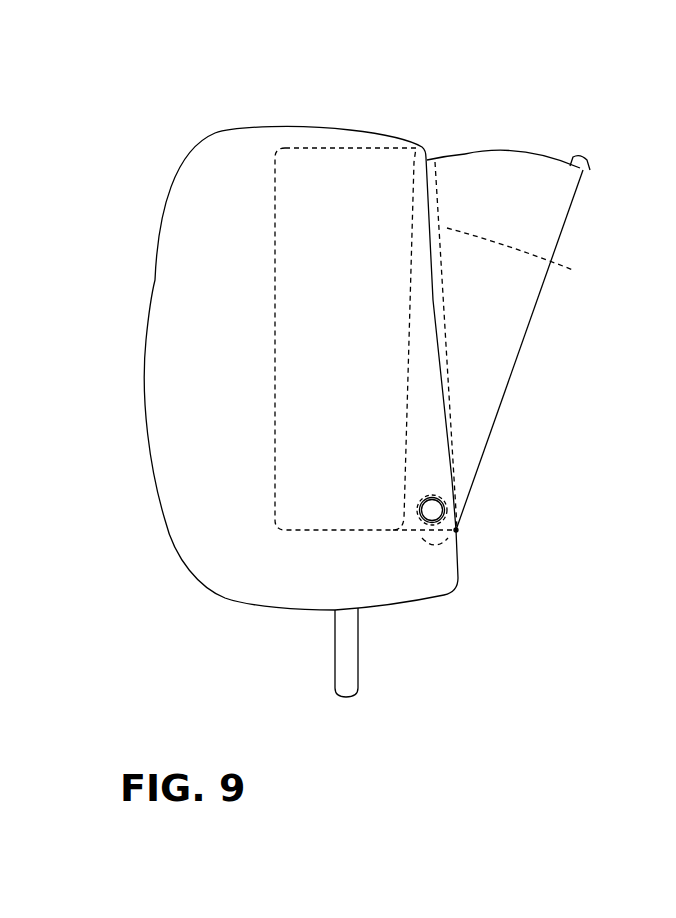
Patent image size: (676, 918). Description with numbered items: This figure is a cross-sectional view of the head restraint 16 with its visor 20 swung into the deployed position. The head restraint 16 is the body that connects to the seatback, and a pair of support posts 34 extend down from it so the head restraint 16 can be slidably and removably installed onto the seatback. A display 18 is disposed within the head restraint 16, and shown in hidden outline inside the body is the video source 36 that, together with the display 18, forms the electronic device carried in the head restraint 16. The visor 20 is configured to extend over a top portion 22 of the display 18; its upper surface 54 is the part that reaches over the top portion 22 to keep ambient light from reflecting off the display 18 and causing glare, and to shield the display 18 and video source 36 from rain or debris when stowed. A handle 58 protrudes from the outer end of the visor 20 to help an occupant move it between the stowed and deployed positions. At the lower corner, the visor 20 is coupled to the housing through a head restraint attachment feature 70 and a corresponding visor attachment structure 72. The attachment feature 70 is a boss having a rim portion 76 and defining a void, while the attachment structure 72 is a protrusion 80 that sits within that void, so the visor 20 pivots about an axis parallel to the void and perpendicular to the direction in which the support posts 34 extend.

The head restraint 16 is at (178, 372).
The display 18 is at (522, 261).
The visor 20 is at (533, 170).
The top portion 22 is at (436, 178).
The support post 34 is at (345, 642).
The video source 36 is at (302, 148).
The upper surface 54 is at (460, 154).
The handle 58 is at (583, 168).
The head restraint attachment feature 70 is at (420, 533).
The visor attachment structure 72 is at (455, 505).
The rim portion 76 is at (457, 533).
The protrusion 80 is at (430, 510).